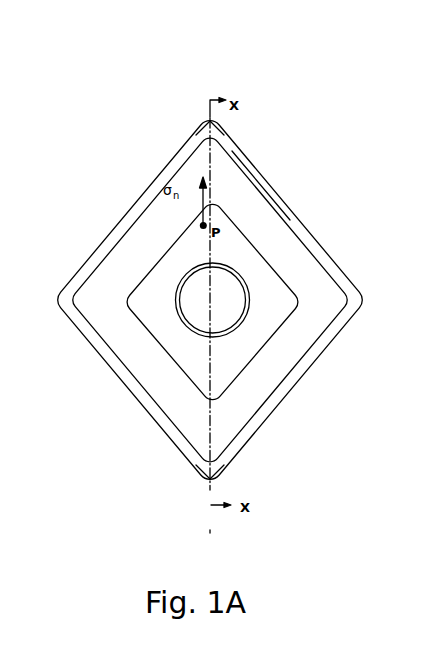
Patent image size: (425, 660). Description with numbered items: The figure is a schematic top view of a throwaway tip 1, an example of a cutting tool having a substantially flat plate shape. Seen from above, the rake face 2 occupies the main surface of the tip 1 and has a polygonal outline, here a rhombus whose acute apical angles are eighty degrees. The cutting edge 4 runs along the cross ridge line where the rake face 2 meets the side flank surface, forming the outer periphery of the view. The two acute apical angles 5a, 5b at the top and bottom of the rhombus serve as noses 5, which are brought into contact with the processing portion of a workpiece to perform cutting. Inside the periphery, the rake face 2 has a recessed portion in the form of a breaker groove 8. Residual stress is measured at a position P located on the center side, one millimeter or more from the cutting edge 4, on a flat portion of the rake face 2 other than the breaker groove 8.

The throwaway tip 1 is at (125, 193).
The rake face 2 is at (277, 247).
The cutting edge 4 is at (257, 167).
The noses 5 is at (181, 265).
The acute apical angle 5a is at (207, 118).
The acute apical angle 5b is at (209, 480).
The breaker groove 8 is at (220, 431).